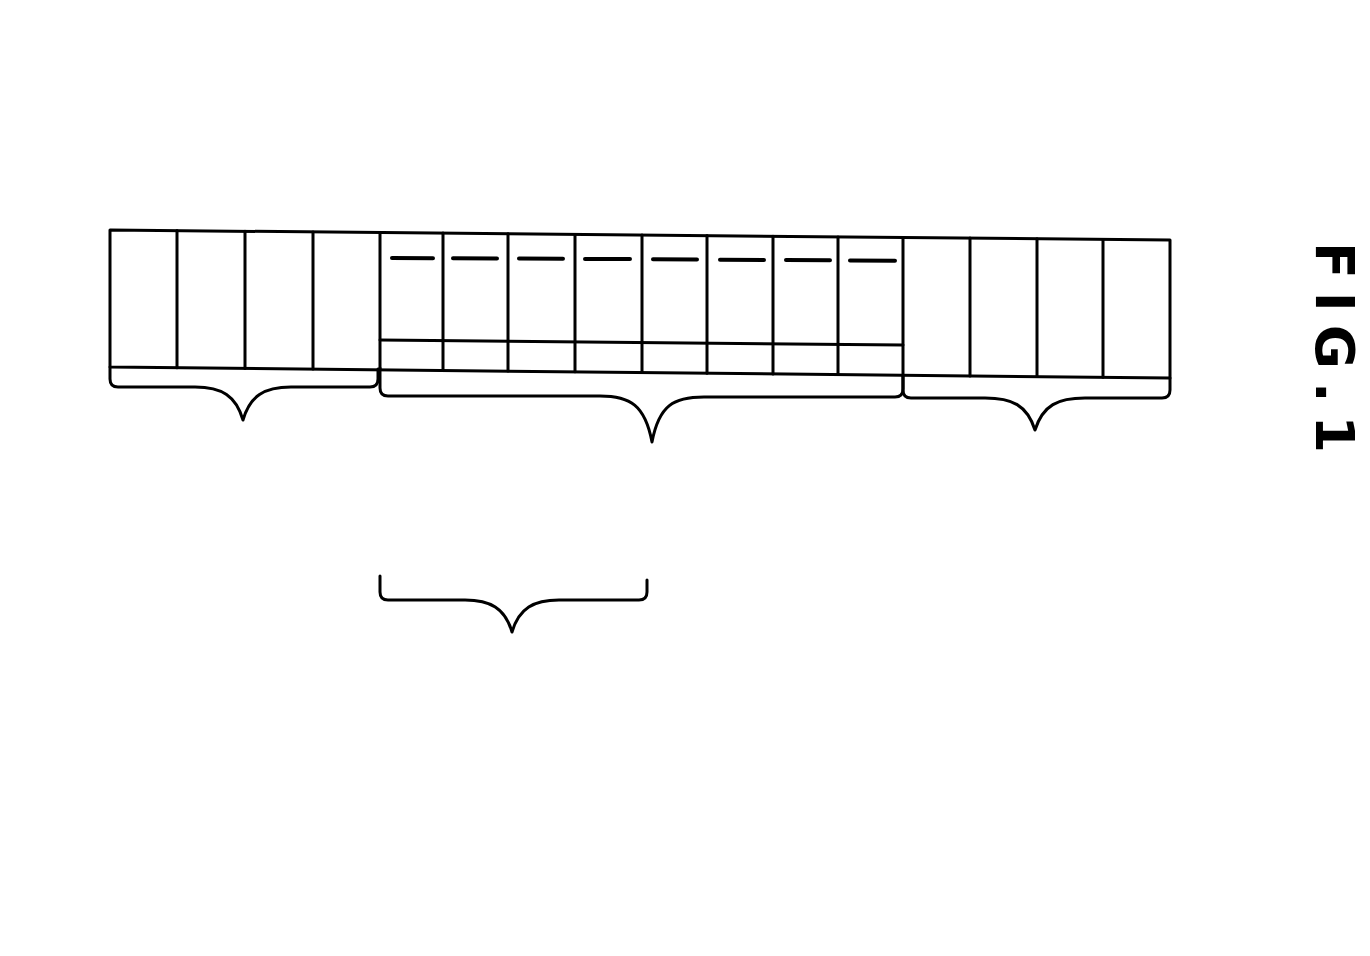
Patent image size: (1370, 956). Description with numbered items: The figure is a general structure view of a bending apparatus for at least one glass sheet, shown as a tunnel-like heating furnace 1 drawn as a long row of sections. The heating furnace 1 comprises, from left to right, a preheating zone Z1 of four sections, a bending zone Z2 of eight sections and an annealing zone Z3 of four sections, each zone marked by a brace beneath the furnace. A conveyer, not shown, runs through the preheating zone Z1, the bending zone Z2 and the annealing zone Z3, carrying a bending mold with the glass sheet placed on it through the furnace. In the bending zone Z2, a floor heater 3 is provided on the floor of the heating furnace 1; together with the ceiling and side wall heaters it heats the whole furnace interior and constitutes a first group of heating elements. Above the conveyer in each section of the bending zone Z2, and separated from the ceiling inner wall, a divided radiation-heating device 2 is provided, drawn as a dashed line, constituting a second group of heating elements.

The heating furnace 1 is at (736, 232).
The radiation-heating device 2 is at (413, 258).
The floor heater 3 is at (468, 341).
The preheating zone Z1 is at (244, 360).
The bending zone Z2 is at (641, 359).
The annealing zone Z3 is at (1036, 366).